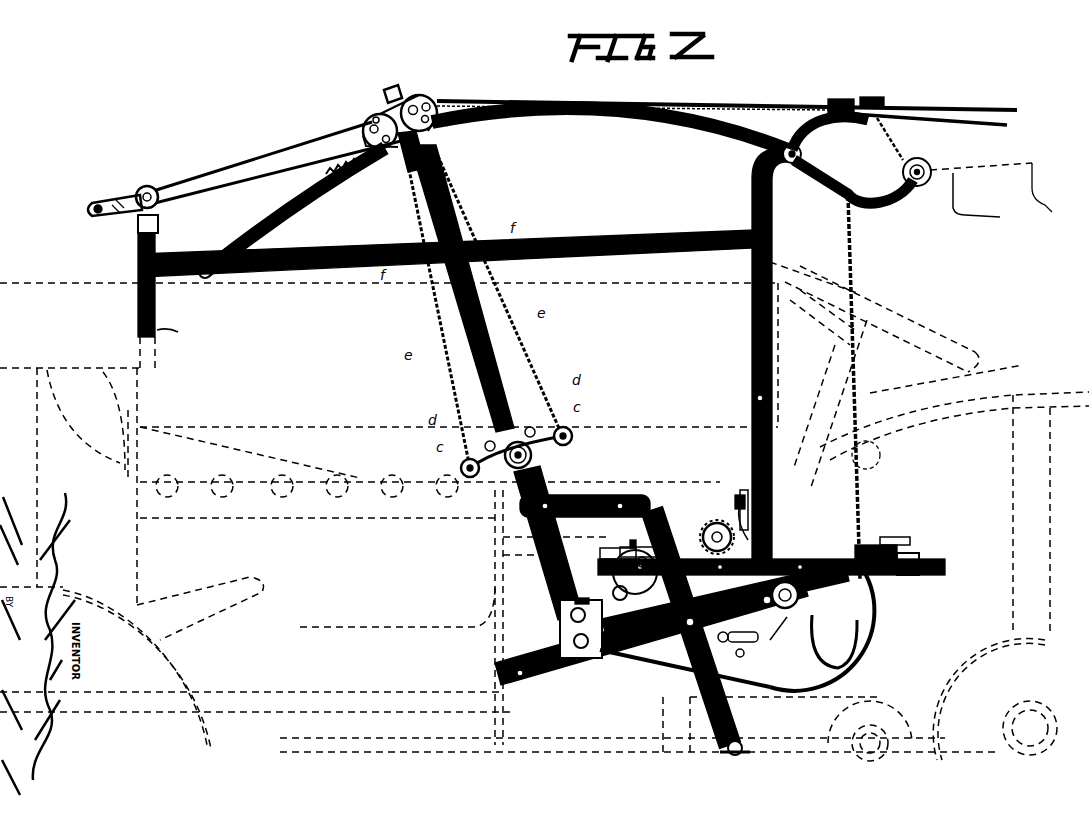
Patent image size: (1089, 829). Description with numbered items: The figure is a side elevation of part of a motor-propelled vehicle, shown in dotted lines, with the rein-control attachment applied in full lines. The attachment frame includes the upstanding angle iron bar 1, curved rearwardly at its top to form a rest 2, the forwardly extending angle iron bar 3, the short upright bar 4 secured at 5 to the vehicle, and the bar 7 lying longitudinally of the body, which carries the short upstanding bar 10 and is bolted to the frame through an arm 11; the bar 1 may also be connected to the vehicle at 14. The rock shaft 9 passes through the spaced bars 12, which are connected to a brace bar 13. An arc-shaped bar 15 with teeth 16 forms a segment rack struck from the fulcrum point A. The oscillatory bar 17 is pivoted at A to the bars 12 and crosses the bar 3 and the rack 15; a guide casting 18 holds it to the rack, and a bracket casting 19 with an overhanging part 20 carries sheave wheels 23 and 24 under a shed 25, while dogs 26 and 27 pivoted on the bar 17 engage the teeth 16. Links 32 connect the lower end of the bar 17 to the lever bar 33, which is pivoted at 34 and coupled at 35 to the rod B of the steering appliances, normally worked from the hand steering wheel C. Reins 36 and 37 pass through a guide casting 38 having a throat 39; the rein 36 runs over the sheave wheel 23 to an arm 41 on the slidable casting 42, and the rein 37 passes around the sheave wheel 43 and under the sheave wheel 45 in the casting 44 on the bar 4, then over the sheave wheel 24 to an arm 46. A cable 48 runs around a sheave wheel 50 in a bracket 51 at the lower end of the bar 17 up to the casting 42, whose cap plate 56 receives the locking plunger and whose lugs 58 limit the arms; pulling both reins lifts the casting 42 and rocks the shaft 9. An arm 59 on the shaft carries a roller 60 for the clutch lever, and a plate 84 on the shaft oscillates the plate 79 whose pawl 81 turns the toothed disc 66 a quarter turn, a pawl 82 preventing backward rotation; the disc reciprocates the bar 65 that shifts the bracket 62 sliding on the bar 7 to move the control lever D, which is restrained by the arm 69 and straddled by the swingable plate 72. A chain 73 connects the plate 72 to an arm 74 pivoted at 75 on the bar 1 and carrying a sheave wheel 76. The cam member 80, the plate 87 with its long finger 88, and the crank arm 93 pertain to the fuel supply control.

The upstanding angle iron bar 1 is at (752, 330).
The rest 2 is at (840, 128).
The angle iron bar 3 is at (652, 236).
The short upright bar 4 is at (137, 256).
The securement point 5 is at (175, 332).
The bar 7 is at (978, 537).
The rock shaft 9 is at (693, 652).
The short upstanding angle iron bar 10 is at (720, 500).
The arm 11 is at (622, 548).
The parallel spaced bars 12 is at (568, 678).
The brace bar 13 is at (498, 670).
The connection point 14 is at (757, 400).
The arc shaped bar (segment rack) 15 is at (700, 114).
The notches or teeth 16 is at (480, 103).
The oscillatory bar 17 is at (496, 376).
The guide casting 18 is at (450, 132).
The bracket casting 19 is at (386, 172).
The overhanging part 20 is at (392, 86).
The sheave wheel 23 is at (428, 97).
The sheave wheel 24 is at (368, 143).
The shed 25 is at (388, 110).
The dog 26 is at (362, 183).
The dog 27 is at (450, 120).
The links 32 is at (566, 497).
The lever bar 33 is at (735, 712).
The pivot point 34 is at (700, 680).
The coupling point 35 is at (745, 752).
The rein 36 is at (975, 110).
The rein 37 is at (1000, 126).
The guide casting 38 is at (878, 98).
The throat 39 is at (838, 100).
The arm 41 is at (566, 452).
The casting 42 is at (488, 500).
The sheave wheel 43 is at (92, 216).
The casting 44 is at (135, 193).
The sheave wheel 45 is at (162, 186).
The arm 46 is at (468, 490).
The cable or rope 48 is at (520, 567).
The sheave wheel 50 is at (581, 619).
The bracket or casting 51 is at (562, 640).
The cap plate 56 is at (532, 455).
The laterally extending lugs 58 is at (532, 428).
The arm 59 is at (786, 558).
The roller 60 is at (860, 545).
The slidable bracket 62 is at (912, 555).
The bar 65 is at (660, 652).
The toothed disc 66 is at (655, 530).
The angularly shaped arm 69 is at (868, 540).
The swingable plate 72 is at (895, 542).
The chain or cable 73 is at (863, 257).
The arm 74 is at (832, 188).
The pivot 75 is at (770, 160).
The sheave wheel 76 is at (990, 201).
The plate 79 is at (618, 600).
The cam member 80 is at (634, 552).
The pawl 81 is at (760, 505).
The pawl 82 is at (704, 532).
The plate or arm 84 is at (809, 628).
The plate 87 is at (731, 662).
The long finger or tooth 88 is at (489, 437).
The crank arm 93 is at (735, 495).
The fulcrum point A is at (595, 665).
The rod B is at (605, 752).
The hand steering wheel C is at (930, 348).
The control lever D is at (884, 462).